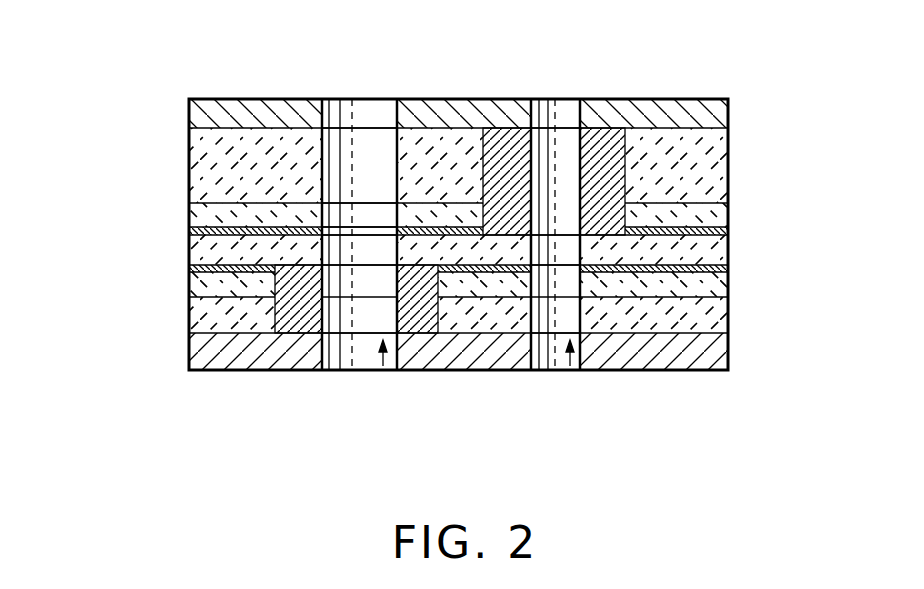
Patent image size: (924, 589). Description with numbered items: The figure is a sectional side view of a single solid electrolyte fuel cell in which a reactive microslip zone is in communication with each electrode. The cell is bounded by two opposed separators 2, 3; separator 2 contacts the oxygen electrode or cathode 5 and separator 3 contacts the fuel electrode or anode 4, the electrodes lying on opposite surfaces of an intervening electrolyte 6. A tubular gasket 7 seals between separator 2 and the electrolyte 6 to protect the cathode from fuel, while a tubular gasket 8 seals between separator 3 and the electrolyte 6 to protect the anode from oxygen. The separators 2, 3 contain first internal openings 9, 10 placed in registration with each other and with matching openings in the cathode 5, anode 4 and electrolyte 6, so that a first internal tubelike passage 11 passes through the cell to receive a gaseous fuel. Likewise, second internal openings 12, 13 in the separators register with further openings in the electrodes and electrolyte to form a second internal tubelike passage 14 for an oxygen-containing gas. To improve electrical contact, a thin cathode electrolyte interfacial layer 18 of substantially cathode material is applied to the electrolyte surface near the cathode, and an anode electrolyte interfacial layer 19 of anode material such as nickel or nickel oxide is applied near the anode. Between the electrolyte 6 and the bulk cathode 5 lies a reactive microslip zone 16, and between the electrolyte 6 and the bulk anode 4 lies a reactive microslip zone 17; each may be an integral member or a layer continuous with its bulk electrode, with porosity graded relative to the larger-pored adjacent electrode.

The separator 2 is at (205, 114).
The separator 3 is at (200, 350).
The fuel electrode or anode 4 is at (205, 315).
The oxygen electrode or cathode 5 is at (207, 170).
The electrolyte 6 is at (205, 250).
The tubular gasket 7 is at (503, 147).
The tubular gasket 8 is at (330, 297).
The first internal opening 9 is at (562, 125).
The first internal opening 10 is at (558, 366).
The first internal tubelike passage 11 is at (570, 368).
The second internal opening 12 is at (370, 112).
The second internal opening 13 is at (360, 366).
The second internal tubelike passage 14 is at (386, 368).
The reactive microslip zone 16 is at (205, 222).
The reactive microslip zone 17 is at (205, 285).
The cathode electrolyte interfacial layer 18 is at (200, 233).
The anode electrolyte interfacial layer 19 is at (200, 268).